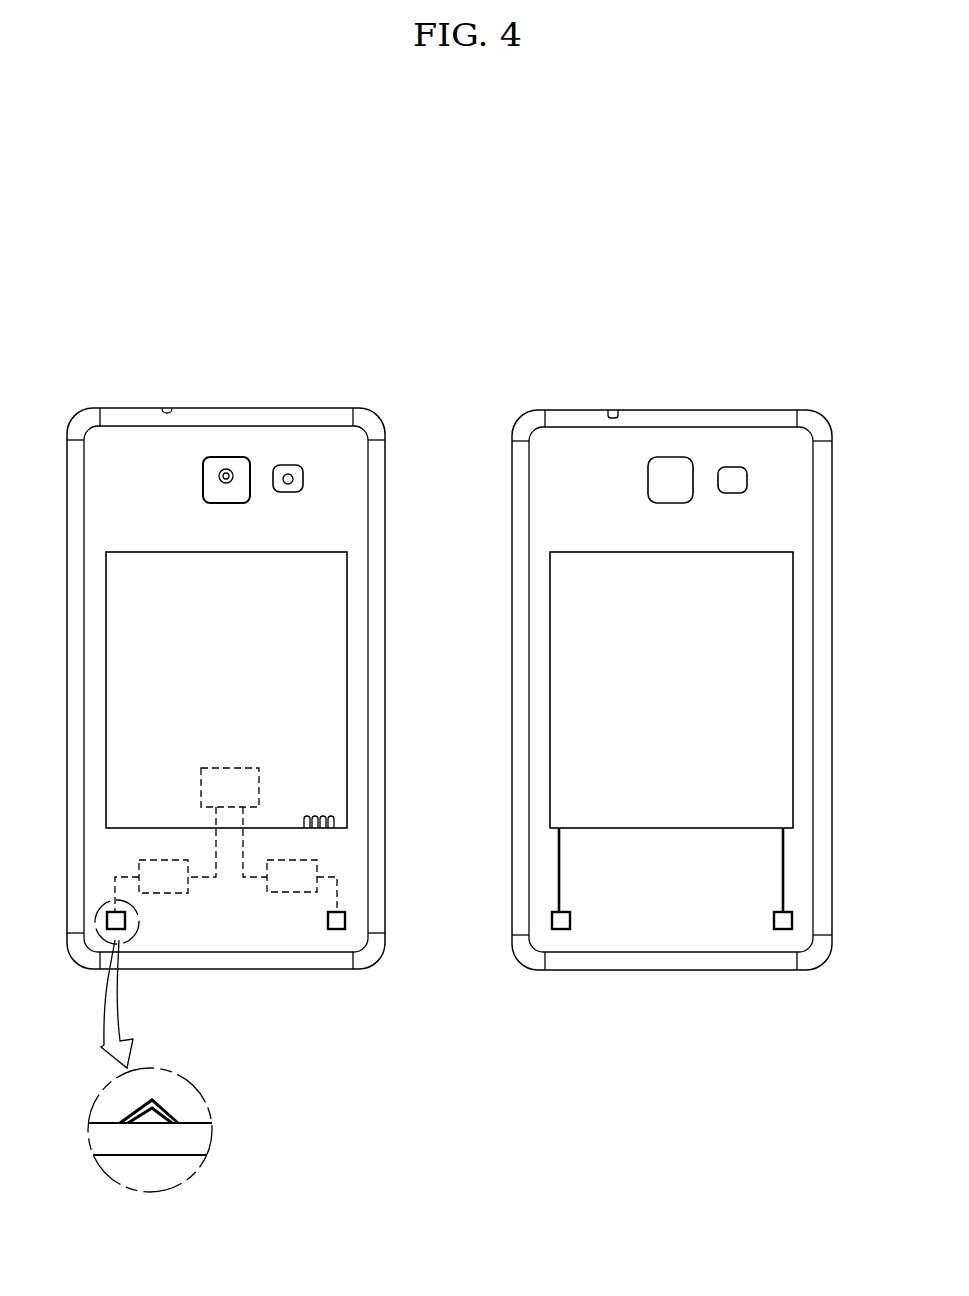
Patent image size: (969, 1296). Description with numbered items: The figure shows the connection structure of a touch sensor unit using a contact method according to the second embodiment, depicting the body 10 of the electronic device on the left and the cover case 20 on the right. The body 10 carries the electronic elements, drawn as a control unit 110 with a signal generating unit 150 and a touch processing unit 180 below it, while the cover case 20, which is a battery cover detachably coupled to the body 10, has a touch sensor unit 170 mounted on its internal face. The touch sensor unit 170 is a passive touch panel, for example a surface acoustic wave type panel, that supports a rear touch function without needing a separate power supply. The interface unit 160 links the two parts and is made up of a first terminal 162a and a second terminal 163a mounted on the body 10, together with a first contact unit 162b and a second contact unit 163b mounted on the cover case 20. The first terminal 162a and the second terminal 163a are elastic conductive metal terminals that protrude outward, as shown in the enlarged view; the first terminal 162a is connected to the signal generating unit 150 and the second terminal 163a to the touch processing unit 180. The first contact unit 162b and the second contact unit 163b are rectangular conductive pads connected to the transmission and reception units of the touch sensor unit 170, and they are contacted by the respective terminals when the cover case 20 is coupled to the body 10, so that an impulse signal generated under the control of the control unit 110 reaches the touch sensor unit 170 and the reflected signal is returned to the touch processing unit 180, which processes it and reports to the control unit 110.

The body 10 is at (213, 409).
The cover case 20 is at (660, 409).
The control unit 110 is at (201, 788).
The signal generating unit 150 is at (139, 862).
The touch processing unit 180 is at (317, 868).
The interface unit 160 is at (757, 1014).
The first terminal 162a is at (125, 921).
The second terminal 163a is at (333, 929).
The first contact unit 162b is at (562, 929).
The second contact unit 163b is at (775, 921).
The touch sensor unit 170 is at (785, 712).